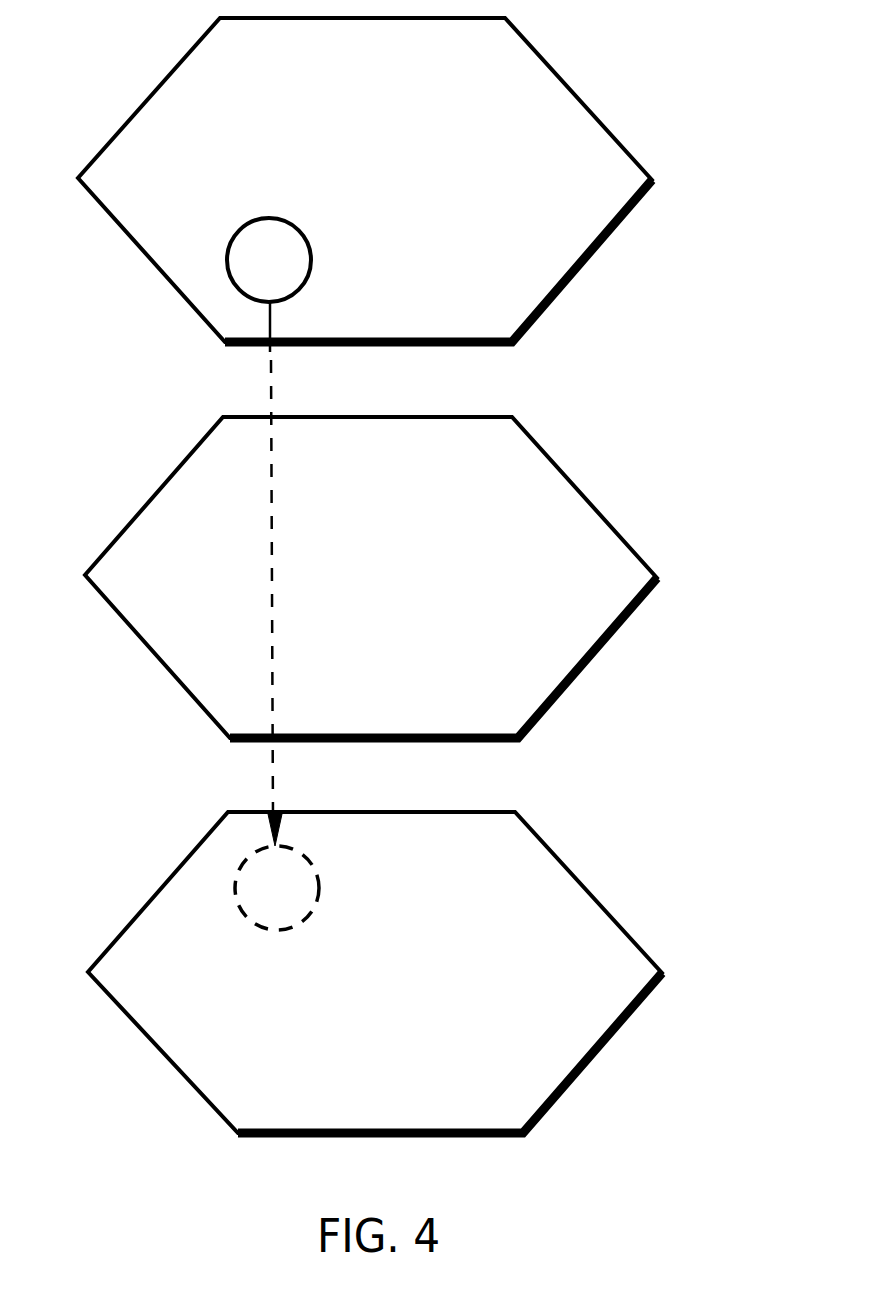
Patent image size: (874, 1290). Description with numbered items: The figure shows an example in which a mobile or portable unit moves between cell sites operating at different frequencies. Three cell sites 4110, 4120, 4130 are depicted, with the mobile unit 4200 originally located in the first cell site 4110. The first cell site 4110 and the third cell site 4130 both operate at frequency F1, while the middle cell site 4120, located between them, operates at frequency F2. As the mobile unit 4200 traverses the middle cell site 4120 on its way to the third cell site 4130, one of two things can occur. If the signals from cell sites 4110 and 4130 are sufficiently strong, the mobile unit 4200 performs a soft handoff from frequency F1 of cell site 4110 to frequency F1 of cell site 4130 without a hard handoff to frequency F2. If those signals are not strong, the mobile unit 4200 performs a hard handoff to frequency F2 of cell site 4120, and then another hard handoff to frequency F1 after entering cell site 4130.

The cell site 4110 is at (411, 196).
The cell site 4120 is at (416, 596).
The cell site 4130 is at (421, 988).
The mobile unit 4200 is at (227, 256).
The frequency F1 is at (657, 177).
The frequency F2 is at (662, 575).